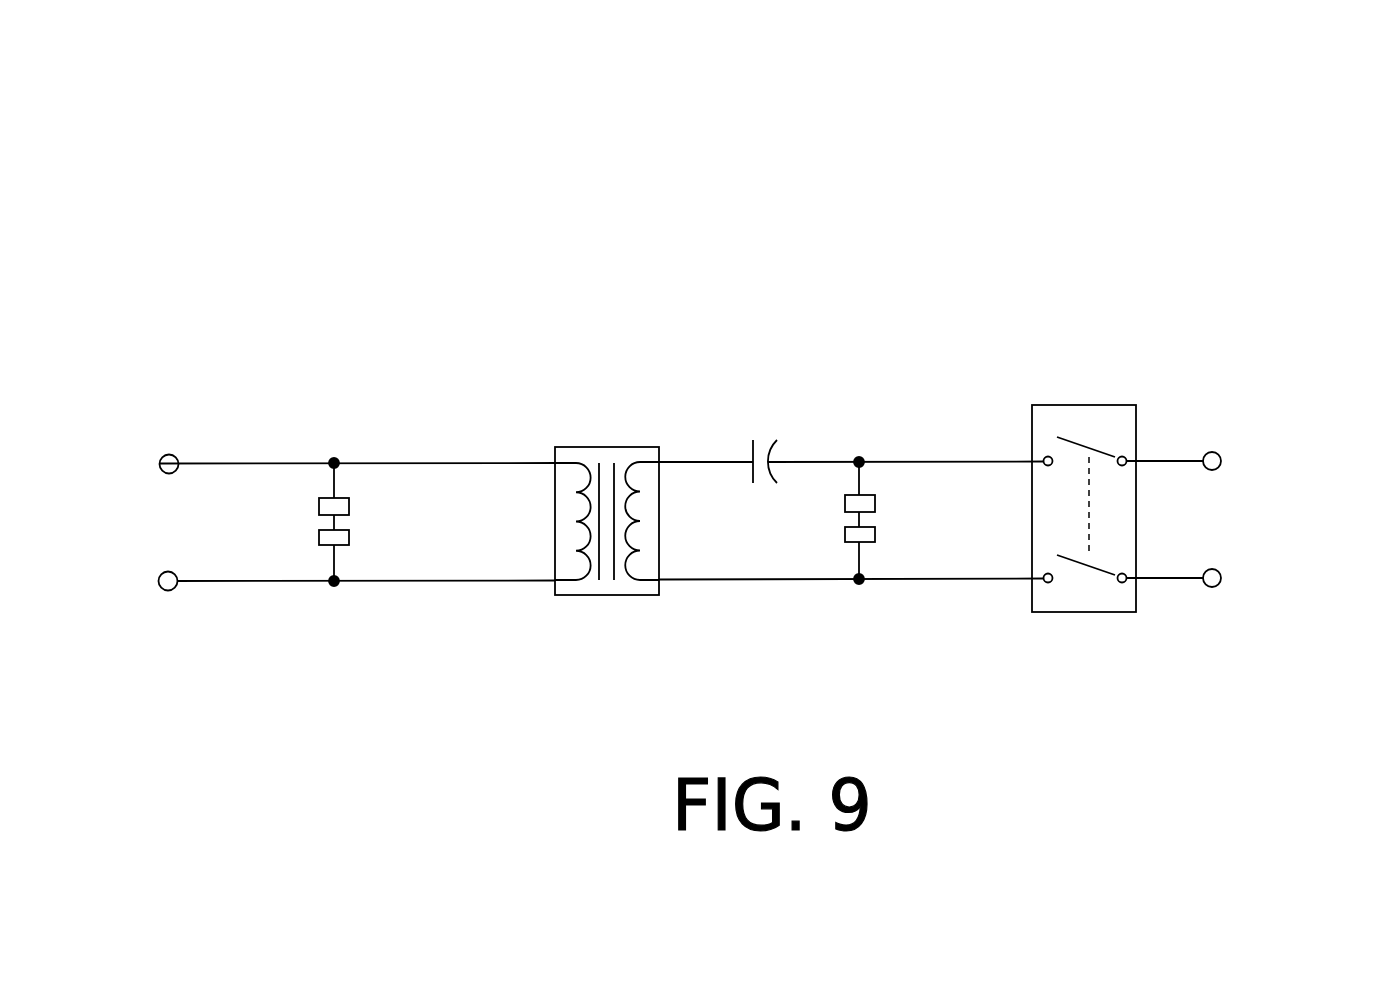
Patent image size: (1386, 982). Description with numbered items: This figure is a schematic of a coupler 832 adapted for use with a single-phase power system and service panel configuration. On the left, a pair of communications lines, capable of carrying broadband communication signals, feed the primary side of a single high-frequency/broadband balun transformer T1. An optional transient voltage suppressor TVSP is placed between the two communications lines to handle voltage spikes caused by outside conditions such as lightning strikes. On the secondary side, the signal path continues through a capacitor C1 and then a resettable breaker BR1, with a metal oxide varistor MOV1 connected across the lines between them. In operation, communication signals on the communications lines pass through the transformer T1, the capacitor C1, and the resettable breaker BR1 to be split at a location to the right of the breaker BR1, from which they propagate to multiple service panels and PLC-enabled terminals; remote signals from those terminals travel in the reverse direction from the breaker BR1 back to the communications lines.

The coupler 832 is at (330, 143).
The transient voltage suppressor TVSP is at (296, 522).
The transformer T1 is at (607, 507).
The capacitor C1 is at (763, 446).
The metal oxide varistor MOV1 is at (821, 520).
The resettable breaker BR1 is at (1084, 529).